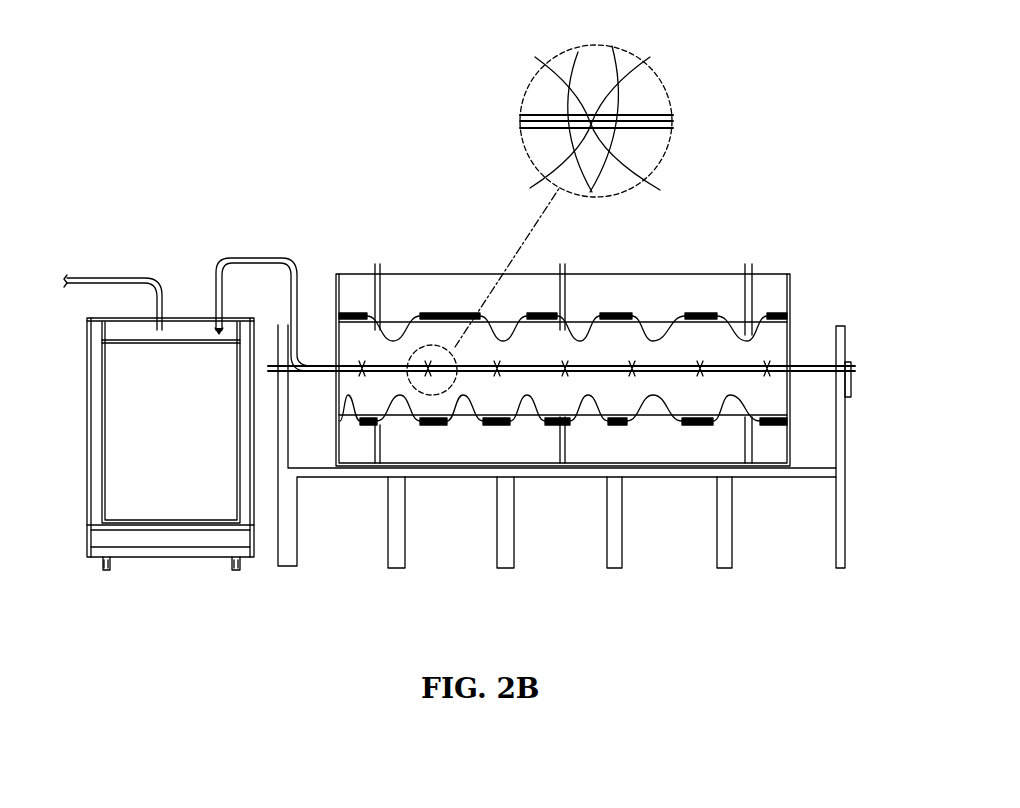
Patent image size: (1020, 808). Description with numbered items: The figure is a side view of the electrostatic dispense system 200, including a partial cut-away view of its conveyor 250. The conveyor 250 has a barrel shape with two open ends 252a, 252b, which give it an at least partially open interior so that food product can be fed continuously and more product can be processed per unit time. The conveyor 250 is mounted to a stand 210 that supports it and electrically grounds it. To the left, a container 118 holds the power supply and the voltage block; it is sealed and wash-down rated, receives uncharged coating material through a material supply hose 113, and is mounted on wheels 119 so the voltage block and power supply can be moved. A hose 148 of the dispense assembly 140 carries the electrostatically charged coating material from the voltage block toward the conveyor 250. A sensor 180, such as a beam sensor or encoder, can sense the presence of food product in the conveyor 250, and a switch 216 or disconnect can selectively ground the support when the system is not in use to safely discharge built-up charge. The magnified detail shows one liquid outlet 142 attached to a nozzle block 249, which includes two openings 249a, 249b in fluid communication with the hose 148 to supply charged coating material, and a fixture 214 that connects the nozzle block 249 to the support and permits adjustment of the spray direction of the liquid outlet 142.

The electrostatic dispense system 200 is at (812, 146).
The material supply hose 113 is at (106, 278).
The container 118 is at (87, 465).
The wheels 119 is at (236, 568).
The hose 148 is at (247, 257).
The open end 252a is at (332, 323).
The open end 252b is at (792, 270).
The conveyor 250 is at (668, 274).
The sensor 180 is at (811, 357).
The switch 216 is at (854, 383).
The stand 210 is at (846, 548).
The dispense assembly 140 is at (354, 386).
The liquid outlet 142 is at (571, 197).
The fixture 214 is at (586, 84).
The nozzle block 249 is at (593, 52).
The opening 249a is at (551, 180).
The opening 249b is at (654, 172).